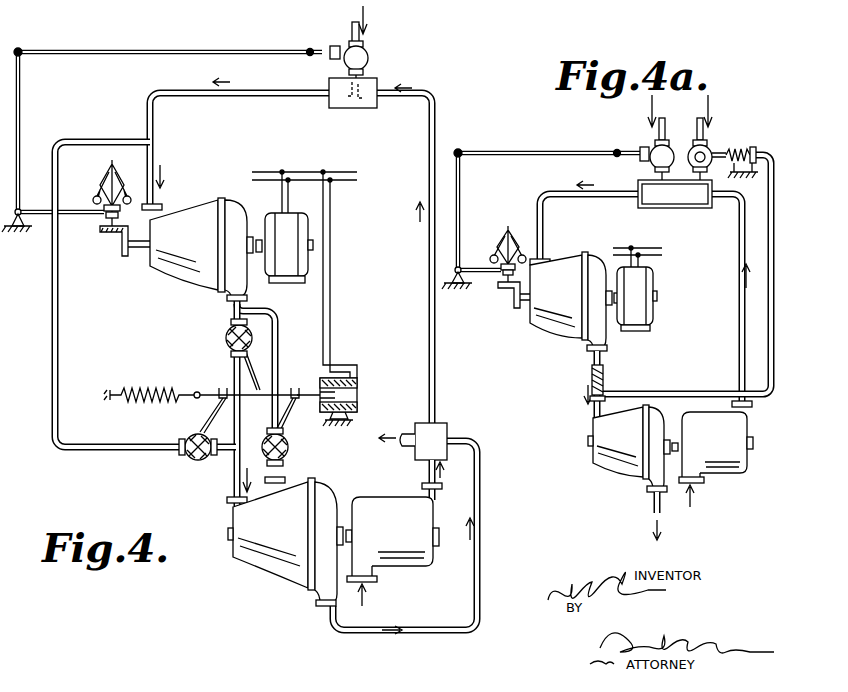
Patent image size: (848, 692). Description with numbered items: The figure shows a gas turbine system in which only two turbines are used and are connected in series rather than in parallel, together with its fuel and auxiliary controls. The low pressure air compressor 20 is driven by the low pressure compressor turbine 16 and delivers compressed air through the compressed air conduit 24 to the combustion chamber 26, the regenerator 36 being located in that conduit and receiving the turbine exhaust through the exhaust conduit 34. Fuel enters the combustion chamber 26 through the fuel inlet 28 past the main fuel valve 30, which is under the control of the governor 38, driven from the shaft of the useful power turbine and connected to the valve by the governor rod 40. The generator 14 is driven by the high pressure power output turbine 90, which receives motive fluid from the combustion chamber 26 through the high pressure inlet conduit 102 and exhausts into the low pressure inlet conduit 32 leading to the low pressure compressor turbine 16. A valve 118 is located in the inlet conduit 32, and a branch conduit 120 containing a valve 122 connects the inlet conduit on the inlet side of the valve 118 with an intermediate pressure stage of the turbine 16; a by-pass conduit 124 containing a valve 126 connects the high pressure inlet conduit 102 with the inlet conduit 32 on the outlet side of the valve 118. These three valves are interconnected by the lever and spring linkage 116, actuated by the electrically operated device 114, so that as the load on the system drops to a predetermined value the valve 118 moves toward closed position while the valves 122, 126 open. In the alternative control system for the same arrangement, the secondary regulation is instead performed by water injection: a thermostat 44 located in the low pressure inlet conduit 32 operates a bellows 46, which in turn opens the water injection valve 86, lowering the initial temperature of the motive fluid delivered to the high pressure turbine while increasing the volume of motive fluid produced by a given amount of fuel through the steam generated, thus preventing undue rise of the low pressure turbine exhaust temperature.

In FIG. 4, the generator 14 is at (295, 276).
In FIG. 4A, the generator 14 is at (655, 287).
In FIG. 4, the low pressure compressor turbine 16 is at (292, 572).
In FIG. 4A, the low pressure compressor turbine 16 is at (624, 475).
In FIG. 4, the low pressure air compressor 20 is at (388, 500).
In FIG. 4A, the low pressure air compressor 20 is at (737, 478).
In FIG. 4, the compressed air conduit 24 is at (429, 298).
In FIG. 4A, the compressed air conduit 24 is at (736, 325).
In FIG. 4, the combustion chamber 26 is at (374, 106).
In FIG. 4A, the combustion chamber 26 is at (688, 207).
In FIG. 4, the fuel inlet stem 28 is at (350, 28).
In FIG. 4A, the fuel inlet stem 28 is at (667, 118).
In FIG. 4, the main fuel valve 30 is at (369, 53).
In FIG. 4A, the main fuel valve 30 is at (650, 160).
In FIG. 4, the low pressure inlet conduit 32 is at (233, 366).
In FIG. 4A, the low pressure inlet conduit 32 is at (592, 366).
In FIG. 4, the exhaust conduit 34 is at (476, 596).
In FIG. 4A, the exhaust conduit 34 is at (652, 506).
In FIG. 4, the regenerator 36 is at (441, 428).
In FIG. 4, the governor 38 is at (102, 180).
In FIG. 4A, the governor 38 is at (499, 242).
In FIG. 4, the governor rod 40 is at (210, 44).
In FIG. 4A, the governor rod 40 is at (561, 154).
In FIG. 4A, the thermostat 44 is at (605, 381).
In FIG. 4A, the bellows 46 is at (752, 146).
In FIG. 4A, the water injection valve 86 is at (708, 148).
In FIG. 4, the high pressure power output turbine 90 is at (204, 212).
In FIG. 4A, the high pressure power output turbine 90 is at (568, 330).
In FIG. 4, the high pressure inlet conduit 102 is at (276, 90).
In FIG. 4A, the high pressure inlet conduit 102 is at (601, 194).
In FIG. 4, the solenoid / cylinder 114 is at (359, 386).
In FIG. 4, the spring lever 116 is at (152, 386).
In FIG. 4, the valve 118 is at (226, 333).
In FIG. 4, the branch conduit 120 is at (277, 352).
In FIG. 4, the valve 122 is at (290, 449).
In FIG. 4, the by-pass conduit 124 is at (62, 312).
In FIG. 4, the valve 126 is at (194, 458).